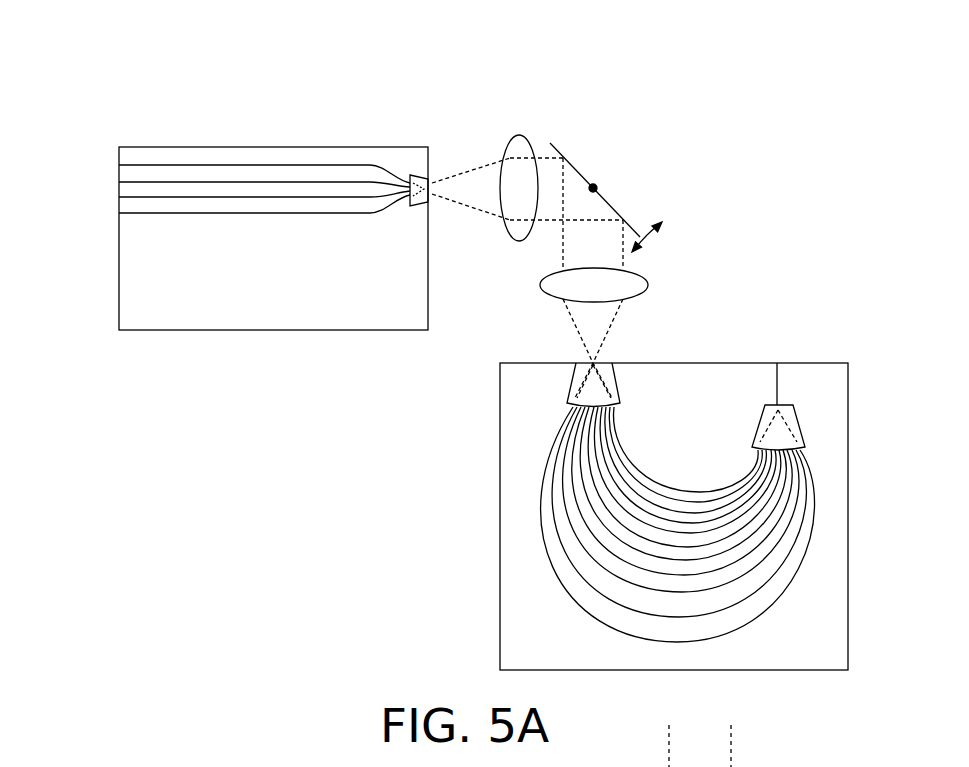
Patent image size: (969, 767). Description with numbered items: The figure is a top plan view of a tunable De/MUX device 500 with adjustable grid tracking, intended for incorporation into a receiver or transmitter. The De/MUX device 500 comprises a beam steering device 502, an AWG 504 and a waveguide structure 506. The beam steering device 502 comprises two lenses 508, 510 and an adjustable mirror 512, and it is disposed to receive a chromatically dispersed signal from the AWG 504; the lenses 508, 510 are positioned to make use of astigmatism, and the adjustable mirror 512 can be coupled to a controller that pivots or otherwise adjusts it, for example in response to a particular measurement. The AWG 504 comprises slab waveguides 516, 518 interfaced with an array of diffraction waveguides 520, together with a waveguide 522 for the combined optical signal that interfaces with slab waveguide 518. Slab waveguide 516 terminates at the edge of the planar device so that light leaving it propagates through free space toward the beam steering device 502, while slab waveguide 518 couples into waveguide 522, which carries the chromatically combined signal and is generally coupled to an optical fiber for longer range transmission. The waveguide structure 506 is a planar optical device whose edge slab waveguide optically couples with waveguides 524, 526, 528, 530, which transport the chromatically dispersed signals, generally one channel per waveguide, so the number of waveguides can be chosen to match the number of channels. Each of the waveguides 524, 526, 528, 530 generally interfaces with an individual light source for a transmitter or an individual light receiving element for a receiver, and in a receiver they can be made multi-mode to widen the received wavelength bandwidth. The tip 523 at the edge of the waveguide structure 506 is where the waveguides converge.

The De/MUX device 500 is at (751, 243).
The beam steering device 502 is at (547, 222).
The AWG 504 is at (820, 362).
The waveguide structure 506 is at (178, 318).
The lens 508 is at (503, 157).
The lens 510 is at (638, 296).
The adjustable mirror 512 is at (627, 220).
The slab waveguide 516 is at (570, 390).
The slab waveguide 518 is at (804, 438).
The array of diffraction waveguides 520 is at (770, 625).
The waveguide 522 is at (776, 388).
The output ferrule tip 523 is at (422, 208).
The waveguide 524 is at (231, 163).
The waveguide 526 is at (138, 181).
The waveguide 528 is at (148, 198).
The waveguide 530 is at (188, 215).